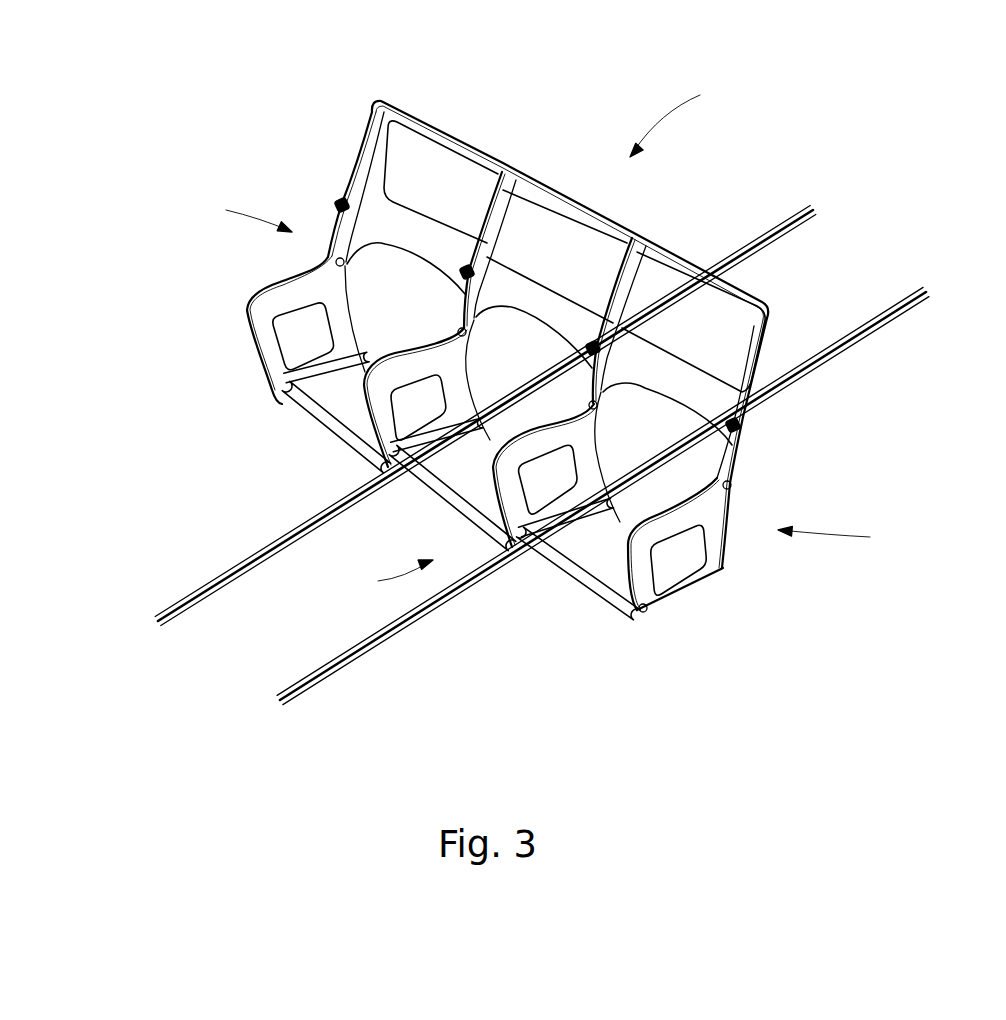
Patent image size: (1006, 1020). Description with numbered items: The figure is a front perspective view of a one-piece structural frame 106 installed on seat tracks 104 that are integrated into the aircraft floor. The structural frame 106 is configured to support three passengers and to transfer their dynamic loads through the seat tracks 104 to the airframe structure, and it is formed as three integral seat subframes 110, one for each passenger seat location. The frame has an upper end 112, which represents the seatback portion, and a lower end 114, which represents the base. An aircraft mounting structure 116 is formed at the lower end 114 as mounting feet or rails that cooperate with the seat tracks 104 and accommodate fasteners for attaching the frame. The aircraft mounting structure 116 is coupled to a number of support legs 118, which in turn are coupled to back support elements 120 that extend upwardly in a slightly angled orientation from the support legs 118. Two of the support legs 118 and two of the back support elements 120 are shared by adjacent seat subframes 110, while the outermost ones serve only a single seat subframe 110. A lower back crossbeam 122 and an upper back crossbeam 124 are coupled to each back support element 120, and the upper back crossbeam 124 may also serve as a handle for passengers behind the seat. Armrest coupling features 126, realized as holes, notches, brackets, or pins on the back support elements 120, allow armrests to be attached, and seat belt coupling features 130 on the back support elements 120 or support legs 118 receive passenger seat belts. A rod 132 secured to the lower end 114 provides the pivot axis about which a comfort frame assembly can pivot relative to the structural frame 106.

The seat tracks 104 is at (268, 542).
The structural frame 106 is at (685, 117).
The seat subframe 110 is at (549, 394).
The upper end 112 is at (576, 202).
The lower end 114 is at (672, 612).
The aircraft mounting structure 116 is at (455, 455).
The support leg 118 is at (249, 326).
The back support element 120 is at (363, 112).
The lower back crossbeam 122 is at (416, 237).
The upper back crossbeam 124 is at (448, 134).
The armrest coupling feature 126 is at (338, 201).
The seat belt coupling feature 130 is at (347, 258).
The rod 132 is at (273, 413).